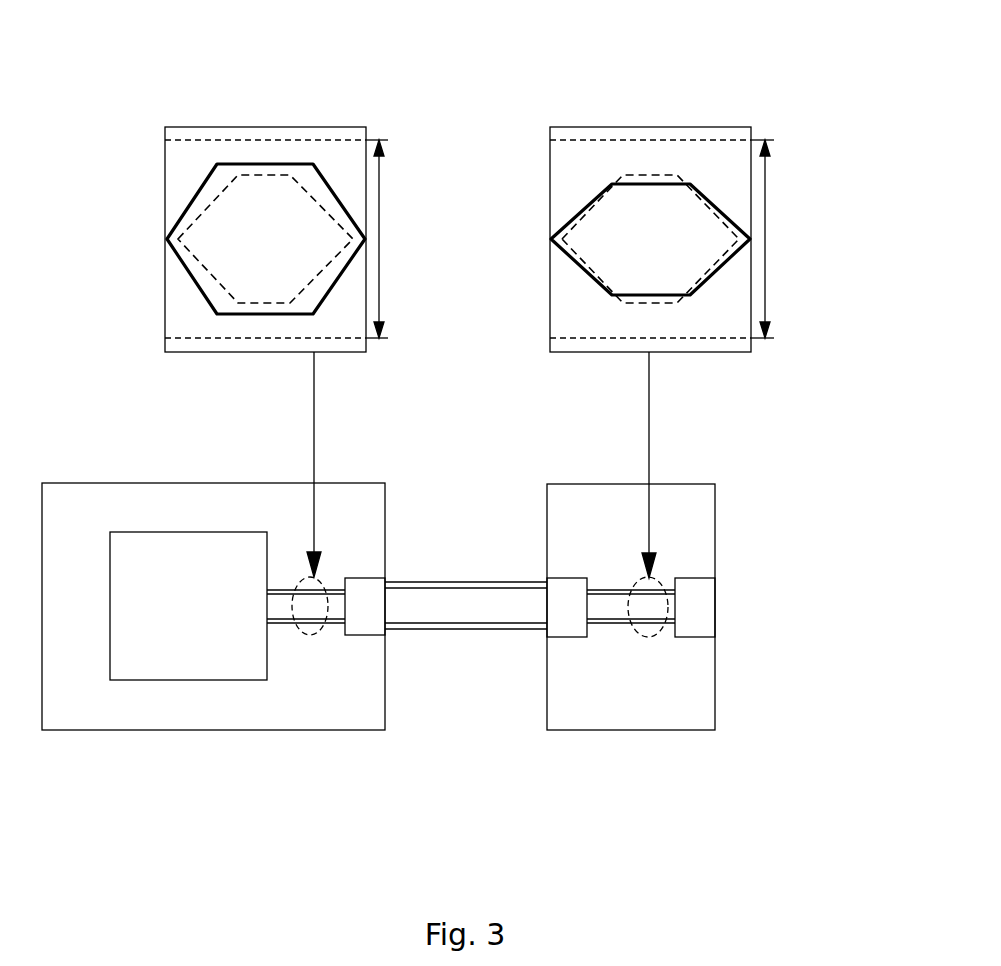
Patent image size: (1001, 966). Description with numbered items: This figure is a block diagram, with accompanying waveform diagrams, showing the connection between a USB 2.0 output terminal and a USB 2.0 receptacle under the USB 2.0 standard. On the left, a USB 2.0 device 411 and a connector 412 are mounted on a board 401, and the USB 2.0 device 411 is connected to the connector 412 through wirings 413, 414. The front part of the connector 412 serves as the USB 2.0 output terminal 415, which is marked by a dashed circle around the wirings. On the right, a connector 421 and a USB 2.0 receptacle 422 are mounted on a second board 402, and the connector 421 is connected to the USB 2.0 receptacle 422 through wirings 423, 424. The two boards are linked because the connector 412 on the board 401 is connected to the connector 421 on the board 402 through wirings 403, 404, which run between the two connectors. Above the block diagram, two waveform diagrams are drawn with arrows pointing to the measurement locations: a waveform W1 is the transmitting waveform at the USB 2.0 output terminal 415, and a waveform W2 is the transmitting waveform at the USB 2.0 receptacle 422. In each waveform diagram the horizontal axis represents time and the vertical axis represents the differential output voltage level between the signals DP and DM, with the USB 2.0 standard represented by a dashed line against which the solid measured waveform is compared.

The waveform W1 is at (263, 164).
The waveform W2 is at (651, 184).
The board 401 is at (72, 730).
The USB 2.0 device 411 is at (142, 680).
The connector 412 is at (370, 635).
The wiring 413 is at (286, 590).
The wiring 414 is at (278, 623).
The USB 2.0 output terminal 415 is at (317, 635).
The wiring 403 is at (475, 582).
The wiring 404 is at (472, 629).
The board 402 is at (648, 730).
The connector 421 is at (563, 637).
The USB 2.0 receptacle 422 is at (698, 637).
The wiring 423 is at (605, 590).
The wiring 424 is at (612, 623).